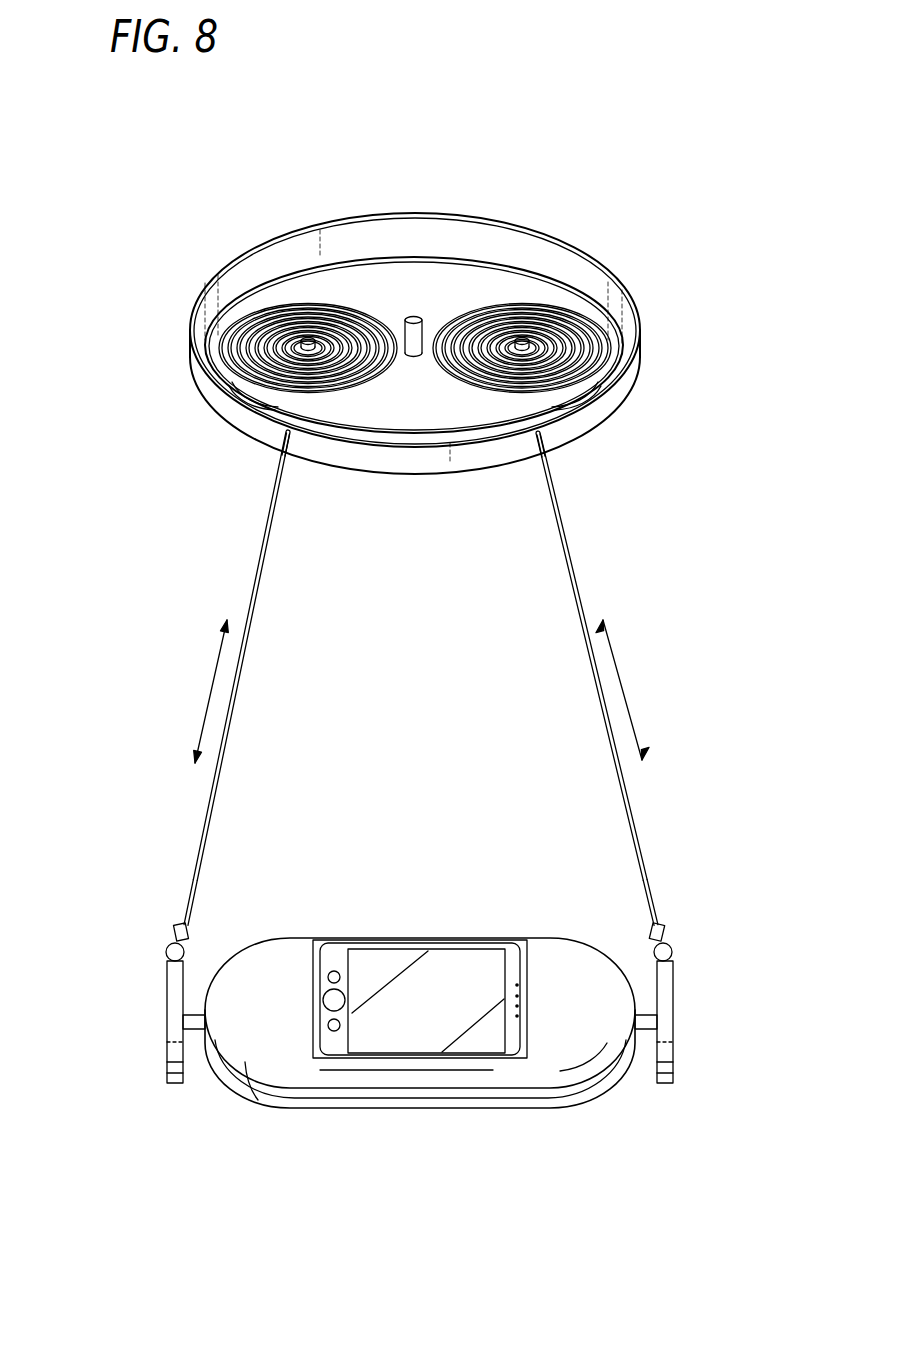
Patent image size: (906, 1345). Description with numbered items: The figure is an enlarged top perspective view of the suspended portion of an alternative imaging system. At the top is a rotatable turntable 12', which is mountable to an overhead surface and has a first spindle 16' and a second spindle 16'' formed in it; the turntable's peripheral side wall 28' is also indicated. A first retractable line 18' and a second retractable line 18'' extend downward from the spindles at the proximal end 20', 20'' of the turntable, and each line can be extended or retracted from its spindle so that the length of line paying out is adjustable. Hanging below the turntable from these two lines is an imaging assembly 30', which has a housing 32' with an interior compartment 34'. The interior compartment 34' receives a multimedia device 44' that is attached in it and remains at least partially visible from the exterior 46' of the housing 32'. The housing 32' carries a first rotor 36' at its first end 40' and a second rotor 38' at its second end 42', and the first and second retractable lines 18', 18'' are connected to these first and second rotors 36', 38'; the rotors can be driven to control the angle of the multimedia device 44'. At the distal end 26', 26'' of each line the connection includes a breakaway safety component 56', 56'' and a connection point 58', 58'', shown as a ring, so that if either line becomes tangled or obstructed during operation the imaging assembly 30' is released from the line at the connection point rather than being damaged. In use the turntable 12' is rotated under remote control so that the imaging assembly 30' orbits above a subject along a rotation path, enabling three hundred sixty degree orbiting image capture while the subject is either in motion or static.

The rotatable turntable 12' is at (417, 296).
The first spindle 16' is at (246, 324).
The second spindle 16'' is at (570, 315).
The side wall 28' is at (464, 402).
The first retractable line 18' is at (232, 677).
The second retractable line 18'' is at (612, 678).
The proximal end 20' is at (209, 473).
The proximal end 20'' is at (622, 477).
The distal end 26' is at (220, 899).
The distal end 26'' is at (626, 894).
The imaging assembly 30' is at (420, 982).
The housing 32' is at (420, 1098).
The interior compartment 34' is at (420, 1008).
The multimedia device 44' is at (431, 1061).
The exterior 46' is at (420, 1046).
The first rotor 36' is at (126, 1023).
The second rotor 38' is at (715, 1024).
The first end 40' is at (114, 893).
The second end 42' is at (730, 895).
The safety component 56' is at (135, 921).
The safety component 56'' is at (711, 921).
The connection point 58' is at (112, 951).
The connection point 58'' is at (733, 954).